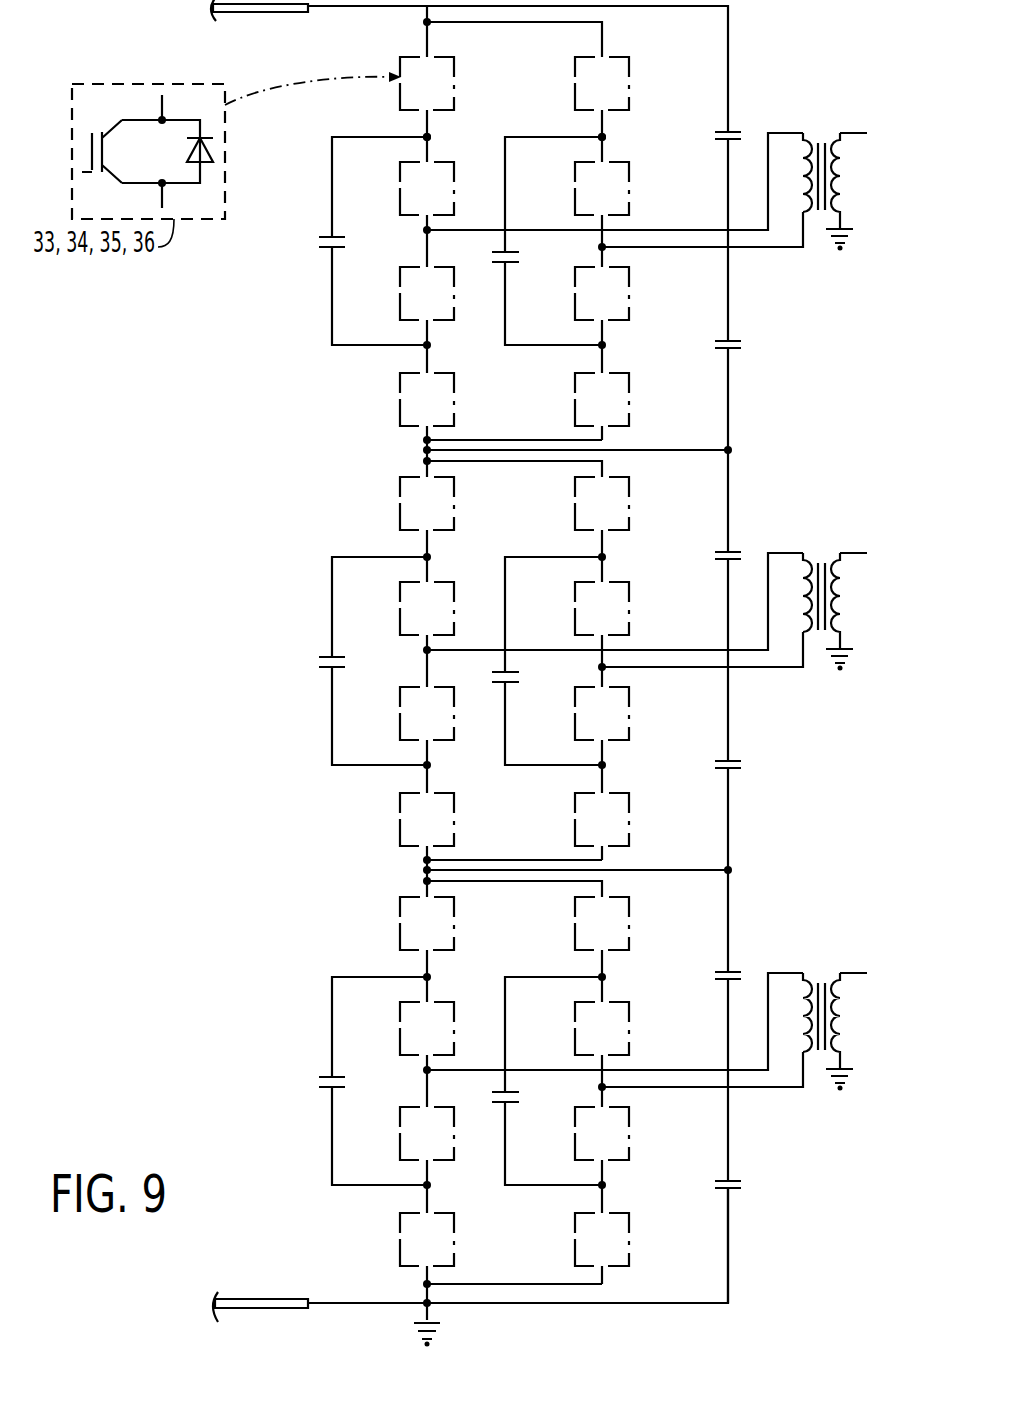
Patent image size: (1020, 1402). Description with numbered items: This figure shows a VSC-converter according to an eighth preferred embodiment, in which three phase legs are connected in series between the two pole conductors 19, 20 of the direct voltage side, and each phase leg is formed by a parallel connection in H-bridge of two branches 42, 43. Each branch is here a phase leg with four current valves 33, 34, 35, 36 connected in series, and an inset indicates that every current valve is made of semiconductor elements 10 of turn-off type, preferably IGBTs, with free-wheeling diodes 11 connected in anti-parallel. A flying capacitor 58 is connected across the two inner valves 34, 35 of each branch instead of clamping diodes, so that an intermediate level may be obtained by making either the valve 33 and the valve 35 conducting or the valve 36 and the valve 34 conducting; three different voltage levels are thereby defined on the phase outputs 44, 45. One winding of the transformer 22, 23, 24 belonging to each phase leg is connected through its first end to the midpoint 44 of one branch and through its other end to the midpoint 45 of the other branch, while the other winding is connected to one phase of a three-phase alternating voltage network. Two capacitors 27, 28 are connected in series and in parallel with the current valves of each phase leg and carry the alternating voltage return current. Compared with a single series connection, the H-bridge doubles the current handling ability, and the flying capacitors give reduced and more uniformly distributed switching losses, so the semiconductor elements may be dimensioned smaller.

The semiconductor element of turn-off type 10 is at (92, 142).
The free-wheeling diode 11 is at (214, 155).
The pole conductor 19 is at (347, 8).
The pole conductor 20 is at (332, 1302).
The transformer 22 is at (840, 132).
The transformer 23 is at (840, 552).
The transformer 24 is at (840, 972).
The capacitor 27 is at (730, 130).
The capacitor 28 is at (733, 338).
The current valve 33 is at (402, 62).
The current valve 34 is at (400, 183).
The current valve 35 is at (400, 289).
The current valve 36 is at (400, 394).
The H-bridge branch 42 is at (425, 137).
The H-bridge branch 43 is at (600, 137).
The midpoint 44 is at (425, 230).
The midpoint 45 is at (600, 247).
The flying capacitor 58 is at (330, 236).